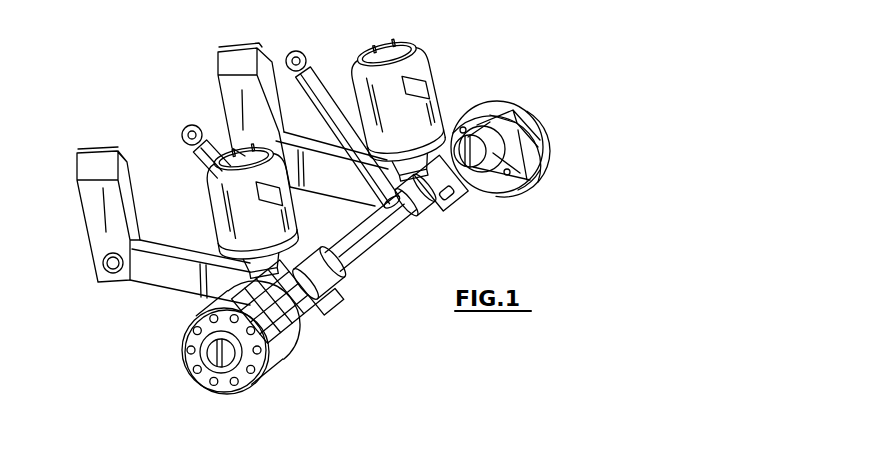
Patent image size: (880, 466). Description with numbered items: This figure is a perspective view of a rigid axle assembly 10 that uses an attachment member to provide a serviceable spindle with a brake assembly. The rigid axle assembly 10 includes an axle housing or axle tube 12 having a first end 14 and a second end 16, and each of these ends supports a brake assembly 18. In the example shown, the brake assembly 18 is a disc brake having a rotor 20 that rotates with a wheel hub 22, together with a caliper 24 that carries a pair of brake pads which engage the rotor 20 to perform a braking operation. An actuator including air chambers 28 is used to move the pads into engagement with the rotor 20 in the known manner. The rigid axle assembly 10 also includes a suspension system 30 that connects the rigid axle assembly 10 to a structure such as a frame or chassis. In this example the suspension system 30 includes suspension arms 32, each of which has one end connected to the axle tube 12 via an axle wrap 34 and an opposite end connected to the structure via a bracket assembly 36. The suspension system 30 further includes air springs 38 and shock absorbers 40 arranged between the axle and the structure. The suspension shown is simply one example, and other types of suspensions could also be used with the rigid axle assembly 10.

The rigid axle assembly 10 is at (631, 142).
The axle tube 12 is at (388, 232).
The first end 14 is at (517, 187).
The second end 16 is at (335, 292).
The brake assembly 18 is at (241, 392).
The rotor 20 is at (277, 370).
The wheel hub 22 is at (198, 365).
The caliper 24 is at (293, 337).
The air chambers 28 is at (340, 264).
The suspension system 30 is at (134, 297).
The suspension arms 32 is at (186, 286).
The axle wrap 34 is at (337, 300).
The bracket assembly 36 is at (100, 211).
The air springs 38 is at (264, 244).
The shock absorbers 40 is at (200, 157).